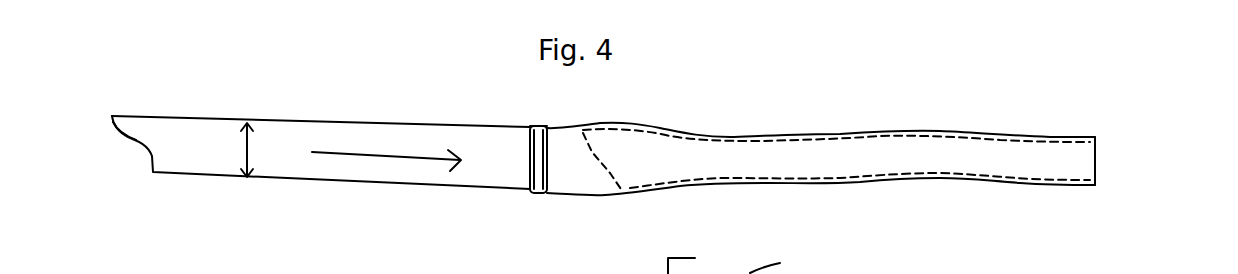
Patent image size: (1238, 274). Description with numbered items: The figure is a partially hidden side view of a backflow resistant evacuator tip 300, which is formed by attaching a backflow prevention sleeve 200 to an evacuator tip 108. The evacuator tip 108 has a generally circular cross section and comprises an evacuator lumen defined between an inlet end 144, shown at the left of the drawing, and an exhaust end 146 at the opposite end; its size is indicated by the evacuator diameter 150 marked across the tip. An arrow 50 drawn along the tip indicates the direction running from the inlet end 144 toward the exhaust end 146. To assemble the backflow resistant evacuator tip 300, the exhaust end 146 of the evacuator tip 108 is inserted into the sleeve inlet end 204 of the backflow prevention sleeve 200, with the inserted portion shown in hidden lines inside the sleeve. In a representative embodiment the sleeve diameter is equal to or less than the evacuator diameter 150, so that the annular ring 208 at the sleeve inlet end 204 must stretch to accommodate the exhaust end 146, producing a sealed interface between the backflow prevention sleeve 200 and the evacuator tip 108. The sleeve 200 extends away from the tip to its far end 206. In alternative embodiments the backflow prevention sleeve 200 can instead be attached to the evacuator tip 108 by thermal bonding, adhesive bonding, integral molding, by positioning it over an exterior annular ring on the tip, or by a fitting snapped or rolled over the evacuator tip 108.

The evacuator tip 108 is at (292, 121).
The inlet end 144 is at (133, 142).
The evacuator diameter 150 is at (245, 150).
The flow direction 50 is at (386, 149).
The sleeve inlet end 204 is at (528, 158).
The annular ring 208 is at (539, 126).
The backflow prevention sleeve 200 is at (840, 132).
The exhaust end 146 is at (605, 168).
The distal end 206 is at (1096, 172).
The backflow resistant evacuator tip 300 is at (642, 82).